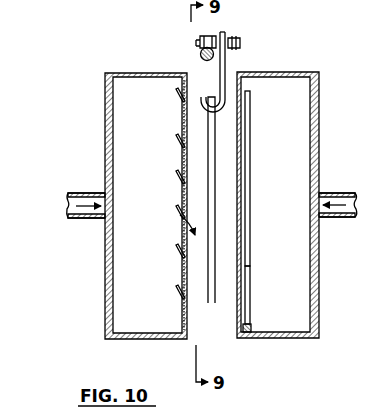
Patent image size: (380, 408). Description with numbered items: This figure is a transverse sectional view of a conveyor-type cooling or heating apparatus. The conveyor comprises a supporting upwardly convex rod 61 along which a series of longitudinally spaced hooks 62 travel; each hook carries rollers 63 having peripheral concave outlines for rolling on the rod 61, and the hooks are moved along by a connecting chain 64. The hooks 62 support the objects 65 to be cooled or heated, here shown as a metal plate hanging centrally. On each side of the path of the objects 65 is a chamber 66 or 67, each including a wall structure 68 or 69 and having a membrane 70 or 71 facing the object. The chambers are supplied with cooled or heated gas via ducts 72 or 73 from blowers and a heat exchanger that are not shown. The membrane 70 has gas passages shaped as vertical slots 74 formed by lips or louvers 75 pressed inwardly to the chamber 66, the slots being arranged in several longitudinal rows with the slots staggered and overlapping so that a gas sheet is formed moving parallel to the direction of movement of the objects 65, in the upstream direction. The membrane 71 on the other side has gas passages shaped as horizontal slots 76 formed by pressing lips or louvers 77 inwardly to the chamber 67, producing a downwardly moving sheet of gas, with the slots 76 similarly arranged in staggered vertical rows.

The supporting upwardly convex rod 61 is at (200, 55).
The hooks 62 is at (225, 60).
The rollers 63 is at (212, 35).
The connecting chain 64 is at (240, 41).
The objects to be cooled (heated) 65 is at (213, 303).
The chamber 66 is at (287, 121).
The chamber 67 is at (158, 118).
The wall structure 68 is at (319, 100).
The wall structure 69 is at (105, 98).
The membrane 70 is at (251, 328).
The membrane 71 is at (182, 200).
The duct 72 is at (325, 193).
The duct 73 is at (94, 193).
The vertical slots 74 is at (250, 300).
The lips or louvers 75 is at (250, 150).
The horizontal slots 76 is at (183, 160).
The lips or louvers 77 is at (182, 178).